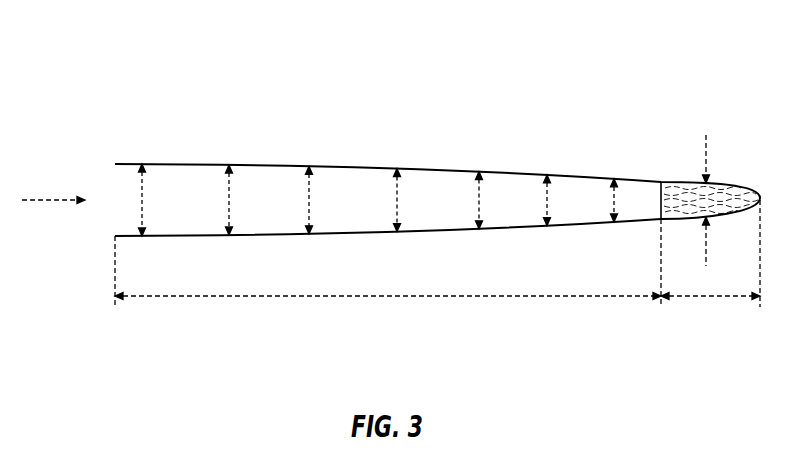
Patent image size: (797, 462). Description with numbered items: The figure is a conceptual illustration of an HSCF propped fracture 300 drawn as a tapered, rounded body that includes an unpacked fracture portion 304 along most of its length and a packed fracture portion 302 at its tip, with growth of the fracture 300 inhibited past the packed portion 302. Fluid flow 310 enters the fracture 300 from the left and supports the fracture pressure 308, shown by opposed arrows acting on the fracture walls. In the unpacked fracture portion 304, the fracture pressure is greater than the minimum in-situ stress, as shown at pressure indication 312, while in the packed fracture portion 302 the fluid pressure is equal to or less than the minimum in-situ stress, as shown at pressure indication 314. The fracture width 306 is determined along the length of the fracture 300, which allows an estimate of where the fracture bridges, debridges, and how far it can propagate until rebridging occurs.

The fracture 300 is at (113, 58).
The packed fracture portion 302 is at (711, 297).
The unpacked fracture portion 304 is at (390, 297).
The fracture width 306 is at (309, 192).
The fracture pressure 308 is at (185, 182).
The fluid flow 310 is at (50, 165).
The pressure indication 312 is at (497, 120).
The pressure indication 314 is at (723, 92).